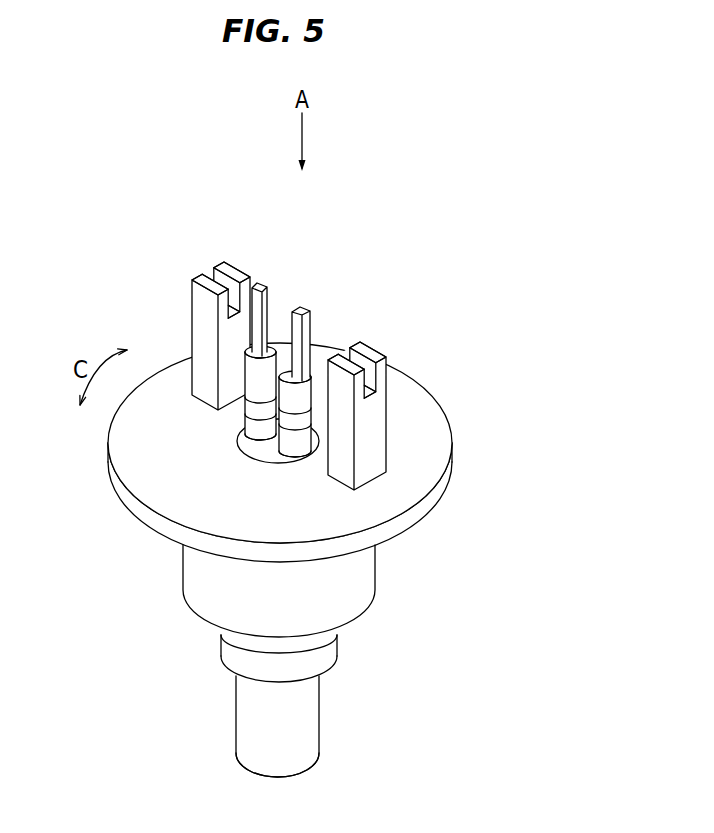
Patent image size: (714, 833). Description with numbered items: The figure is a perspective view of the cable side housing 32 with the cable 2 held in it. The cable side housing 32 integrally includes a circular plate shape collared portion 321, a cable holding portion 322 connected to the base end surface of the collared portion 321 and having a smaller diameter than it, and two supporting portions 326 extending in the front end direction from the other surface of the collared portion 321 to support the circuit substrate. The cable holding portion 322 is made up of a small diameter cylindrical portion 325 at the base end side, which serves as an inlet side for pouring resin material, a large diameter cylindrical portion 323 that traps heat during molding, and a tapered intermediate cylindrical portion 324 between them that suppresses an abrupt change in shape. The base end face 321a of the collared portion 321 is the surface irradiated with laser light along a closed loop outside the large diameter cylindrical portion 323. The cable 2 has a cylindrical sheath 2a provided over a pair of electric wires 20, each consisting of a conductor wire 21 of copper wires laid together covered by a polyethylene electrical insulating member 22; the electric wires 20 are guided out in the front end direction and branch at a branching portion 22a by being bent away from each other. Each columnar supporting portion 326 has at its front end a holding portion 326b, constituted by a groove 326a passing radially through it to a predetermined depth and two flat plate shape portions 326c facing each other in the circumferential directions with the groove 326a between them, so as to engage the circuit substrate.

The cable 2 is at (320, 713).
The sheath 2a is at (252, 732).
The electric wire 20 is at (315, 229).
The conductor wire 21 is at (256, 285).
The electrical insulating member 22 is at (267, 347).
The branching portion 22a is at (273, 428).
The cable side housing 32 is at (568, 507).
The collared portion 321 is at (427, 517).
The base end face 321a is at (153, 534).
The cable holding portion 322 is at (440, 595).
The large diameter cylindrical portion 323 is at (375, 588).
The intermediate cylindrical portion 324 is at (293, 648).
The small diameter cylindrical portion 325 is at (336, 663).
The supporting portion 326 is at (388, 438).
The groove 326a is at (210, 272).
The holding portion 326b is at (231, 313).
The flat plate shape portion 326c is at (221, 266).